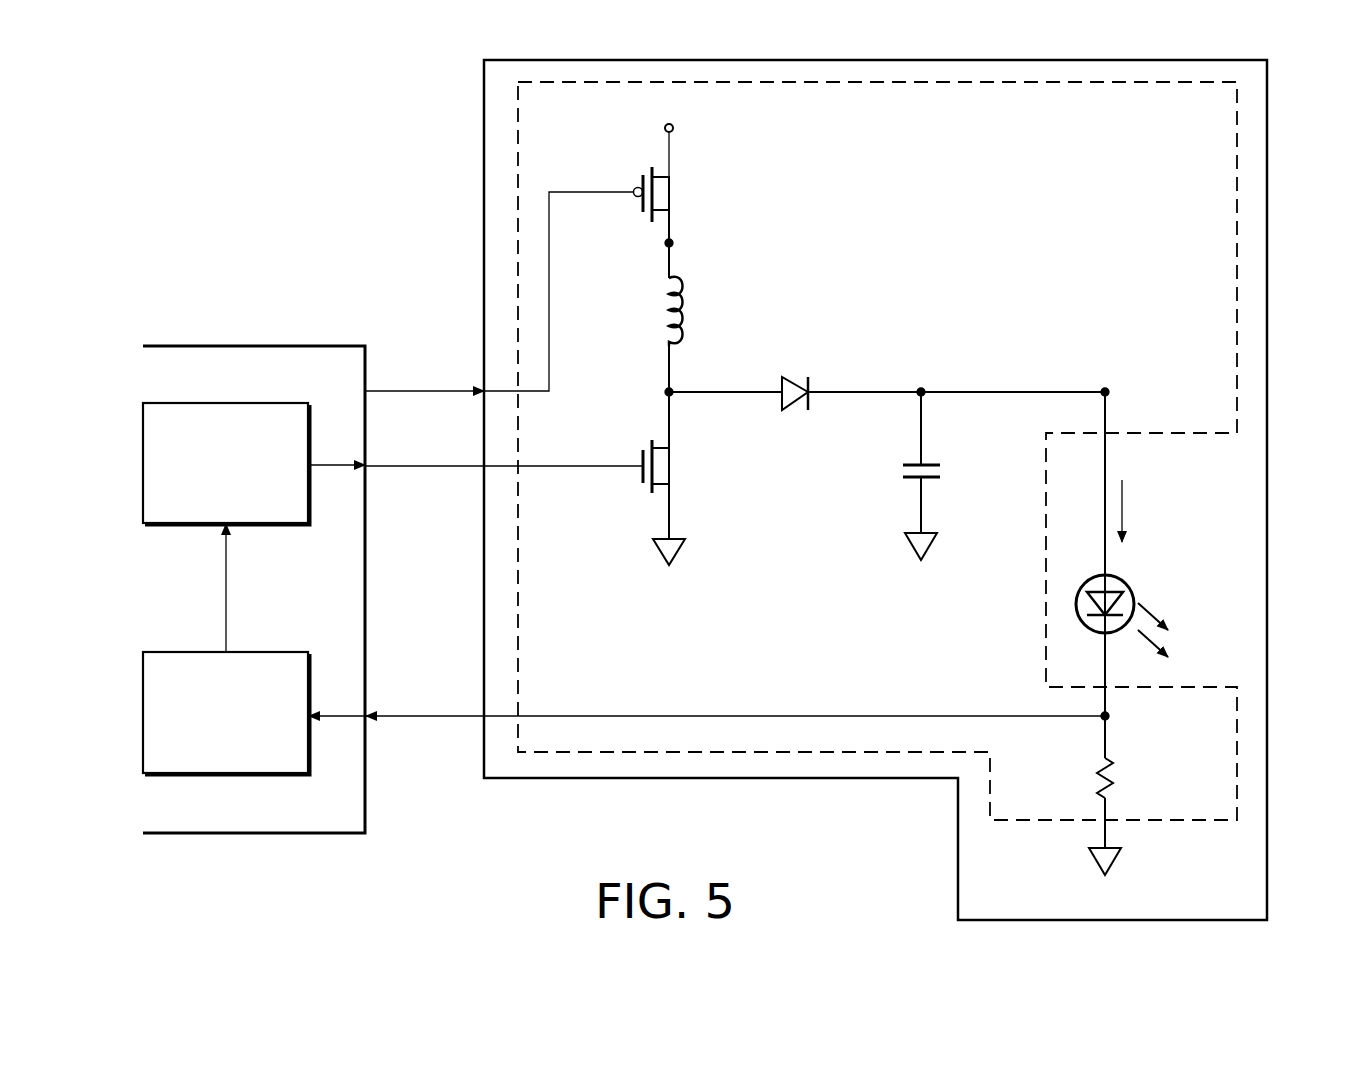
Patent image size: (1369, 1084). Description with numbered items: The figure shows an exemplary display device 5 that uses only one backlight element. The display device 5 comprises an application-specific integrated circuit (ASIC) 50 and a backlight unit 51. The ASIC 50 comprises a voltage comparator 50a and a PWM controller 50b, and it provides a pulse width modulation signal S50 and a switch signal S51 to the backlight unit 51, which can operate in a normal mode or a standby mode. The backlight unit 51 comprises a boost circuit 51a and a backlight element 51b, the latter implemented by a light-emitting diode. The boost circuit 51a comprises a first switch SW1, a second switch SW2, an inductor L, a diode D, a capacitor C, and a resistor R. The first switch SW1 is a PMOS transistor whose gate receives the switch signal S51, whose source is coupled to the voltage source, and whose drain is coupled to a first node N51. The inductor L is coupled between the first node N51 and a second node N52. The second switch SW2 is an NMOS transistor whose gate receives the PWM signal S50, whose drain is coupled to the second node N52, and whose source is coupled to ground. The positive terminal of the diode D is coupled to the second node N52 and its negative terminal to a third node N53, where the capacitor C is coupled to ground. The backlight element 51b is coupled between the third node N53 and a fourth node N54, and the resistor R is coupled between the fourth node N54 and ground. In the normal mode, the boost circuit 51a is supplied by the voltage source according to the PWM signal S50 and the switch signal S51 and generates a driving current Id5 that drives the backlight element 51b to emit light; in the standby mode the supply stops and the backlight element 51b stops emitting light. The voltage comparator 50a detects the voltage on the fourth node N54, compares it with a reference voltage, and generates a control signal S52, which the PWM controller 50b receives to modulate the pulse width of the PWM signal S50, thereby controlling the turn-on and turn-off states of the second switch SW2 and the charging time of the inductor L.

The display device 5 is at (70, 116).
The application-specific integrated circuit 50 is at (255, 346).
The voltage comparator 50a is at (143, 710).
The PWM controller 50b is at (143, 460).
The backlight unit 51 is at (1267, 485).
The boost circuit 51a is at (1240, 297).
The backlight element 51b is at (1136, 586).
The first switch SW1 is at (676, 193).
The second switch SW2 is at (676, 466).
The inductor L is at (695, 318).
The diode D is at (795, 375).
The capacitor C is at (945, 470).
The resistor R is at (1113, 780).
The first node N51 is at (676, 243).
The second node N52 is at (665, 392).
The third node N53 is at (1105, 388).
The fourth node N54 is at (1112, 716).
The driving current Id5 is at (1148, 511).
The PWM signal S50 is at (475, 448).
The switch signal S51 is at (499, 291).
The control signal S52 is at (258, 588).